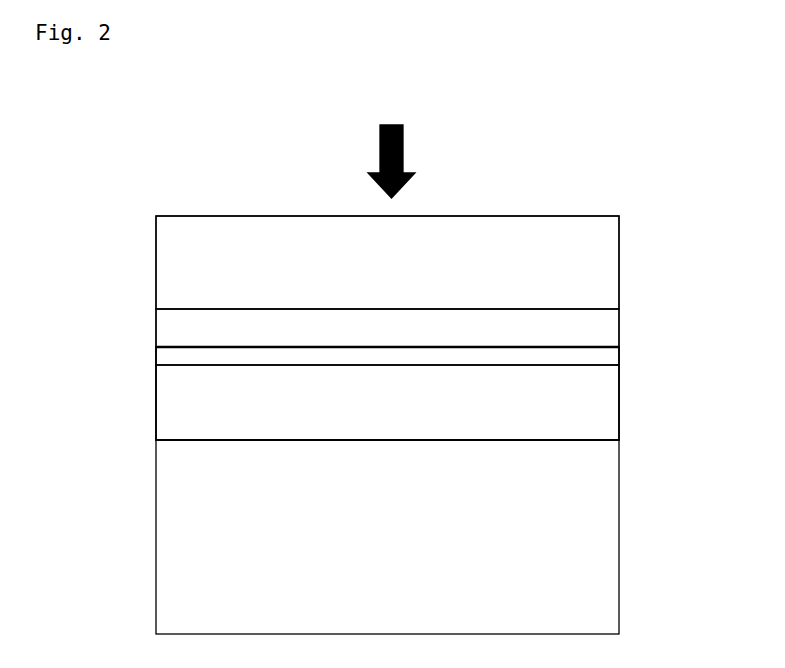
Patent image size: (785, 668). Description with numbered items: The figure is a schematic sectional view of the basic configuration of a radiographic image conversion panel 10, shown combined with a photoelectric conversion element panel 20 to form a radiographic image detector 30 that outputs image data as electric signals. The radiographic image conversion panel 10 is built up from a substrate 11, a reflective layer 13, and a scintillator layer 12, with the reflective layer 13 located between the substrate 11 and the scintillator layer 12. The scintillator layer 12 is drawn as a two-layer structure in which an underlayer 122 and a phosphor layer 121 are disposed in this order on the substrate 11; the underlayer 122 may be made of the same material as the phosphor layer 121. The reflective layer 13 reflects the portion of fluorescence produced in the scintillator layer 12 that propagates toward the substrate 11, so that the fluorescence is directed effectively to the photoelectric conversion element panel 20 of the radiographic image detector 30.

The radiographic image conversion panel 10 is at (148, 216).
The photoelectric conversion element panel 20 is at (148, 440).
The substrate 11 is at (610, 290).
The reflective layer 13 is at (610, 337).
The scintillator layer 12 is at (728, 327).
The phosphor layer 121 is at (610, 422).
The underlayer 122 is at (613, 363).
The radiographic image detector 30 is at (462, 188).